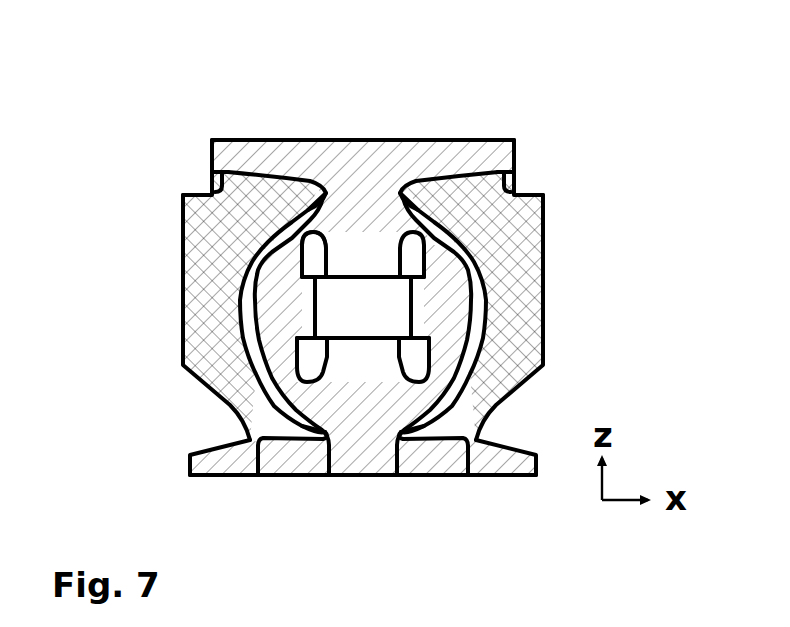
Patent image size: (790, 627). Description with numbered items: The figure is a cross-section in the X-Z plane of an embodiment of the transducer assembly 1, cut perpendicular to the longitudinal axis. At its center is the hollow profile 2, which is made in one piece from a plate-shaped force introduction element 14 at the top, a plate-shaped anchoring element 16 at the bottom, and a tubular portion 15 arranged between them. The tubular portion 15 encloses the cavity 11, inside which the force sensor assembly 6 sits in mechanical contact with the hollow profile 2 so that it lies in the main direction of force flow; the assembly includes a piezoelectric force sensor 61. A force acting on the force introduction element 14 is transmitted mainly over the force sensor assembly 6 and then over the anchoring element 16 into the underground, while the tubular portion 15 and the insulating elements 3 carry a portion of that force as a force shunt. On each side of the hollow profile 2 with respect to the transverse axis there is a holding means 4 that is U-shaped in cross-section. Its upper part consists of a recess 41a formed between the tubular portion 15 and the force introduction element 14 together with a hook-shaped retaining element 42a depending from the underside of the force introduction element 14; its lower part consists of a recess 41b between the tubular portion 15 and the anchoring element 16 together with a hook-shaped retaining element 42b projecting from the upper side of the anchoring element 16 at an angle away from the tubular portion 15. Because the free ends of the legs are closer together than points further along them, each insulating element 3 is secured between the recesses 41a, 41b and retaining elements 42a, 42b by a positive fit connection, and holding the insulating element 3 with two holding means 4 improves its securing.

The transducer assembly 1 is at (143, 82).
The hollow profile 2 is at (236, 248).
The insulating element 3 is at (212, 348).
The holding means 4 is at (240, 201).
The force sensor assembly 6 is at (300, 287).
The cavity 11 is at (520, 347).
The force introduction element 14 is at (425, 140).
The tubular portion 15 is at (528, 252).
The anchoring element 16 is at (215, 460).
The recess 41a is at (332, 140).
The recess 41b is at (330, 477).
The hook-shaped retaining element 42a is at (202, 140).
The hook-shaped retaining element 42b is at (259, 477).
The force sensor 61 is at (316, 315).